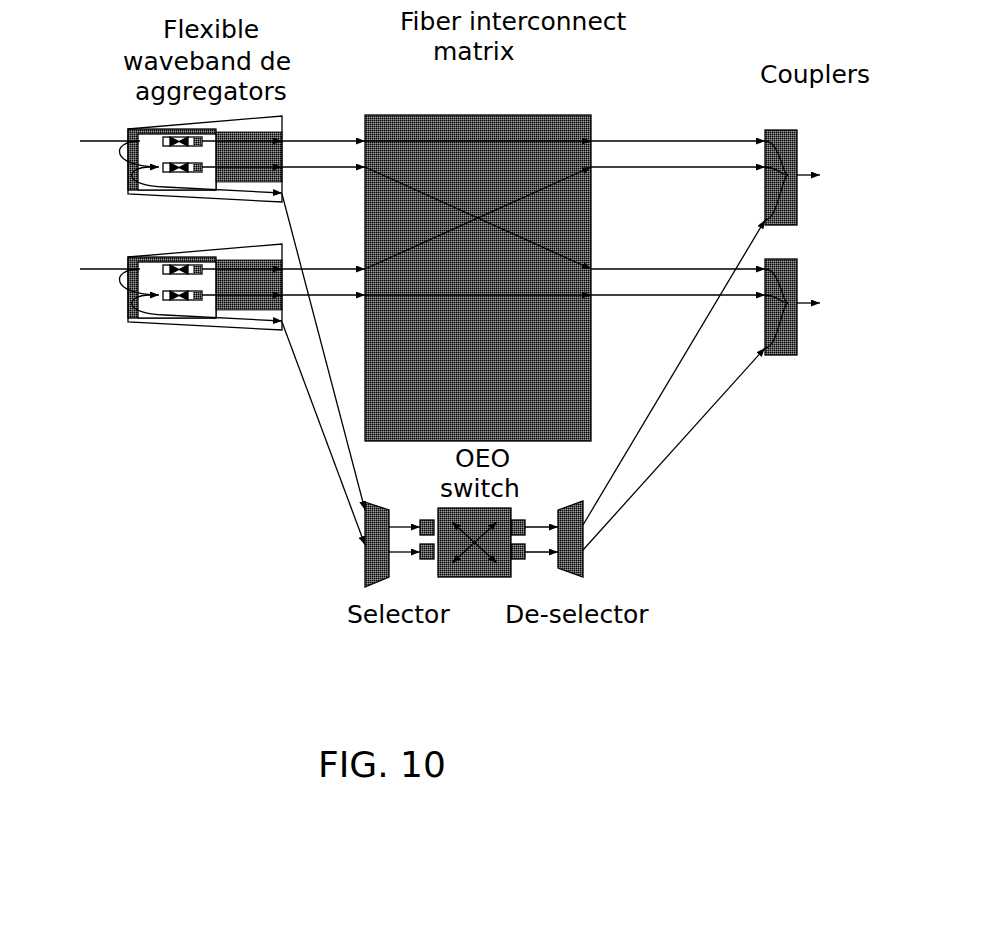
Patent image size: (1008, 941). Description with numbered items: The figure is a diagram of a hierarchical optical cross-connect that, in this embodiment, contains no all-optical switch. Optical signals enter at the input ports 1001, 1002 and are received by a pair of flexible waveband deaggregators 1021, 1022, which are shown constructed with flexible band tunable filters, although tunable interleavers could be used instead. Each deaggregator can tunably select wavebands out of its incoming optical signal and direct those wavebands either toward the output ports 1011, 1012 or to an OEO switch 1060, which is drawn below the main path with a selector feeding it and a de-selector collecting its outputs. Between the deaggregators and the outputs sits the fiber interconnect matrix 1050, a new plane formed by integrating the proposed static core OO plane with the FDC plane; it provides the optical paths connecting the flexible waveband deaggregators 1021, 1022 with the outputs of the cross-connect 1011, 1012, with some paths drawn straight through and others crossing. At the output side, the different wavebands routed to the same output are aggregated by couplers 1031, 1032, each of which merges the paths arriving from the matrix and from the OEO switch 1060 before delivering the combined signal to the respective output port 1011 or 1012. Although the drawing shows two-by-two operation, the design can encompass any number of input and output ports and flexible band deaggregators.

The input port 1001 is at (90, 146).
The input port 1002 is at (90, 275).
The flexible waveband deaggregator 1021 is at (200, 171).
The flexible waveband deaggregator 1022 is at (200, 300).
The fiber interconnect matrix 1050 is at (478, 263).
The OEO switch 1060 is at (472, 556).
The coupler 1031 is at (783, 166).
The coupler 1032 is at (783, 330).
The output port 1011 is at (852, 194).
The output port 1012 is at (852, 320).